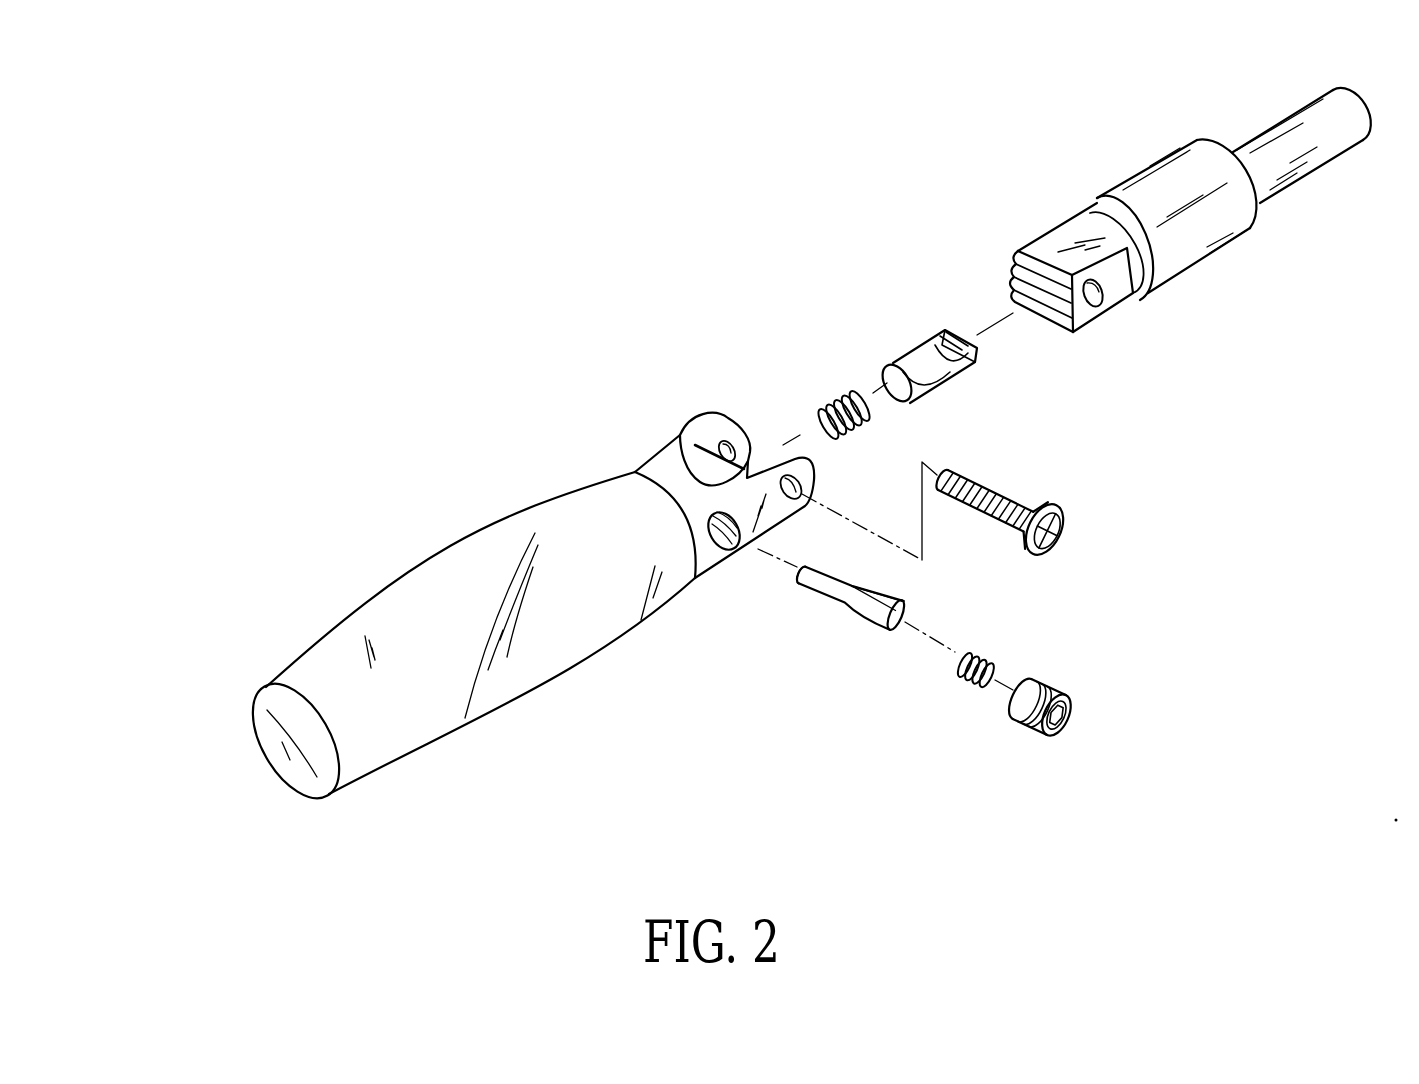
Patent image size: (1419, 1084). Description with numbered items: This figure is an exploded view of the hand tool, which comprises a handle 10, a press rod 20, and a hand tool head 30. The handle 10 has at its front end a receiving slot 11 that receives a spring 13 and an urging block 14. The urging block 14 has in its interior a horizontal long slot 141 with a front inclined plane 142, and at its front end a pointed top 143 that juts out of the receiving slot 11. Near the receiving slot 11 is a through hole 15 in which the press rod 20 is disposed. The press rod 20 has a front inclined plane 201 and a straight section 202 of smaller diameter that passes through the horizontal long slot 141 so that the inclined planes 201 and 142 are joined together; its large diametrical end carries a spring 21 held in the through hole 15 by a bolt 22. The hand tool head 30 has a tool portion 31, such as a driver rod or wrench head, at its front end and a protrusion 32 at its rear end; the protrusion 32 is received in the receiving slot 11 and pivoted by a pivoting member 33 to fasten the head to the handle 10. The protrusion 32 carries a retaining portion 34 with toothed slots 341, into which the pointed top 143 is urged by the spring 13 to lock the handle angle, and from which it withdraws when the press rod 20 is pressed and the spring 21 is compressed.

The handle 10 is at (467, 620).
The receiving slot 11 is at (765, 435).
The spring 13 is at (826, 400).
The urging block 14 is at (975, 362).
The horizontal long slot 141 is at (935, 372).
The front inclined plane 142 is at (960, 362).
The pointed top 143 is at (962, 337).
The through hole 15 is at (721, 552).
The press rod 20 is at (883, 608).
The front inclined plane 201 is at (872, 587).
The straight section 202 is at (820, 582).
The spring 21 is at (960, 678).
The bolt 22 is at (1016, 714).
The hand tool head 30 is at (1197, 236).
The tool portion 31 is at (1321, 128).
The protrusion 32 is at (1075, 235).
The pivoting member 33 is at (1060, 540).
The retaining portion 34 is at (1047, 333).
The toothed slot 341 is at (1030, 258).